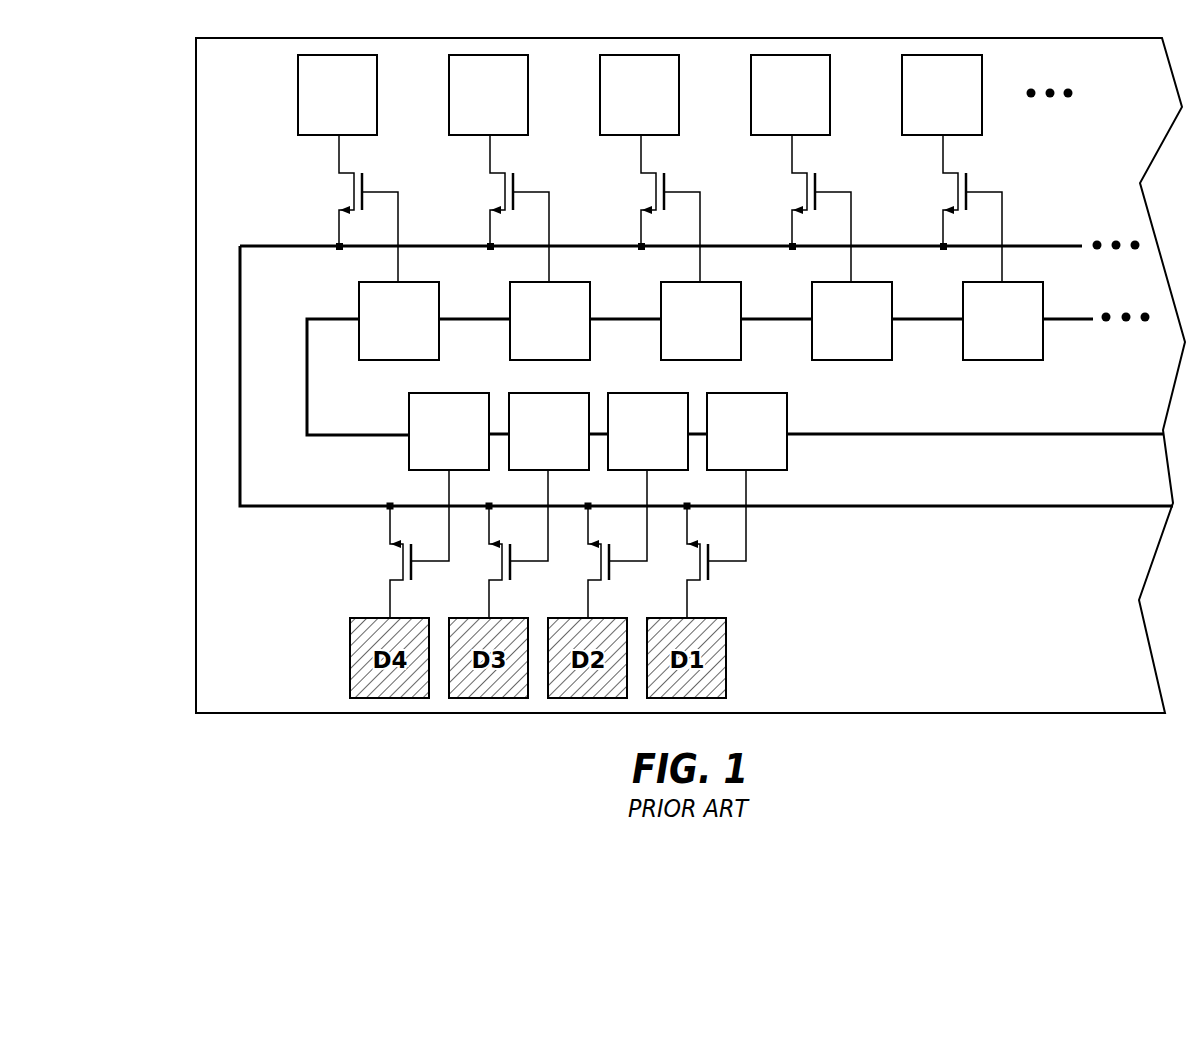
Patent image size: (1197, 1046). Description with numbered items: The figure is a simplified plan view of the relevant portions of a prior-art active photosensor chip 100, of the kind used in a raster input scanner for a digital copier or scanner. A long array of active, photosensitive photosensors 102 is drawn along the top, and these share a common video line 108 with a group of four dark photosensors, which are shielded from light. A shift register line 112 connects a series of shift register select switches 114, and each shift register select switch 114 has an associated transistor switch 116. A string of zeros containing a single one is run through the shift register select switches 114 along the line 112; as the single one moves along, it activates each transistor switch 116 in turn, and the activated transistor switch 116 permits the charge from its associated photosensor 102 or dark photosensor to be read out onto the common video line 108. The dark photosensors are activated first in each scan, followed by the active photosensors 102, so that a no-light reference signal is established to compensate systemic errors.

The image sensor / pixel array circuit 100 is at (196, 266).
The active photosensor 102 is at (298, 102).
The common video line 108 is at (1047, 505).
The shift register line 112 is at (1025, 432).
The shift register select switch 114 is at (535, 393).
The transistor switch 116 is at (474, 190).